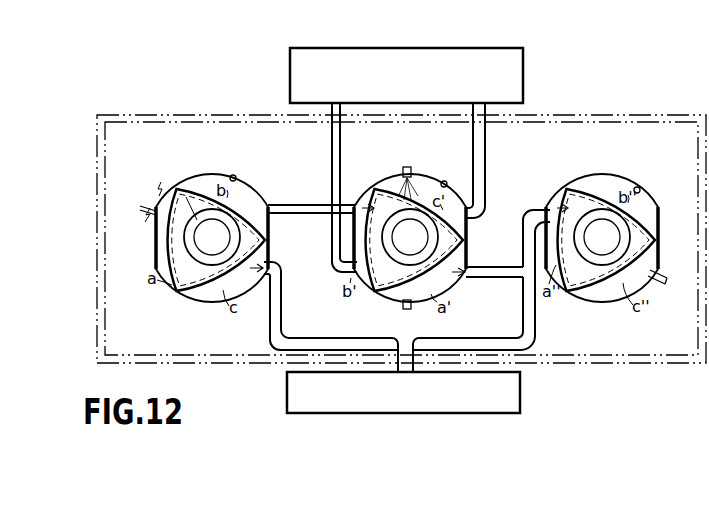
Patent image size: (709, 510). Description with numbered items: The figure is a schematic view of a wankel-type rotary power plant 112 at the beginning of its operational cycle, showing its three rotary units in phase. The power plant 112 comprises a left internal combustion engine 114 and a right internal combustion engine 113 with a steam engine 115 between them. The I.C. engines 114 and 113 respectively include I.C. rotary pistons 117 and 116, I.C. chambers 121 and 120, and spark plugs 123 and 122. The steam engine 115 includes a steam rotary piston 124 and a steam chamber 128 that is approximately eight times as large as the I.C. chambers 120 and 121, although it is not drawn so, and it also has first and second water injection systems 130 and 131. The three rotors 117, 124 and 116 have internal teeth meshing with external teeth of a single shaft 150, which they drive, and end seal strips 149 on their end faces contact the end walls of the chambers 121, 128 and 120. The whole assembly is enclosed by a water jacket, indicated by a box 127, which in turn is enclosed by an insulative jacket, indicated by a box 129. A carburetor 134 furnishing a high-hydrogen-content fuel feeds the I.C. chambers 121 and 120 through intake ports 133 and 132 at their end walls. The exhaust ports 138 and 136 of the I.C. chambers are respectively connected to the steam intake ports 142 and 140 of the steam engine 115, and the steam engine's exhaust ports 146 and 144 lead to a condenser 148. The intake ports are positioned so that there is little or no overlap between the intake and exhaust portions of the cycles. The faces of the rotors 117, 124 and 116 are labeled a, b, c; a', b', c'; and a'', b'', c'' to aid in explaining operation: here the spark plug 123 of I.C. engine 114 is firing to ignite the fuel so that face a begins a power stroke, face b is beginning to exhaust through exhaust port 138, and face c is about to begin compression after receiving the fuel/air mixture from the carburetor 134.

The wankel-type rotary power plant 112 is at (401, 222).
The right internal combustion engine 113 is at (590, 169).
The left internal combustion engine 114 is at (219, 166).
The steam engine 115 is at (433, 170).
The I.C. rotary piston 116 is at (578, 292).
The I.C. rotary piston 117 is at (176, 291).
The I.C. chamber 120 is at (639, 188).
The I.C. chamber 121 is at (234, 176).
The spark plug 122 is at (665, 281).
The spark plug 123 is at (150, 204).
The steam rotary piston 124 is at (380, 300).
The water jacket 127 is at (596, 121).
The steam chamber 128 is at (445, 182).
The insulative jacket 129 is at (660, 115).
The first water injection system 130 is at (405, 167).
The second water injection system 131 is at (414, 309).
The intake port 132 is at (560, 200).
The intake port 133 is at (268, 262).
The carburetor 134 is at (466, 406).
The exhaust port 136 is at (527, 285).
The exhaust port 138 is at (268, 205).
The steam intake port 140 is at (452, 283).
The steam intake port 142 is at (373, 194).
The exhaust port 144 is at (468, 212).
The exhaust port 146 is at (340, 279).
The condenser 148 is at (458, 88).
The end seal strips 149 is at (194, 186).
The shaft 150 is at (202, 246).